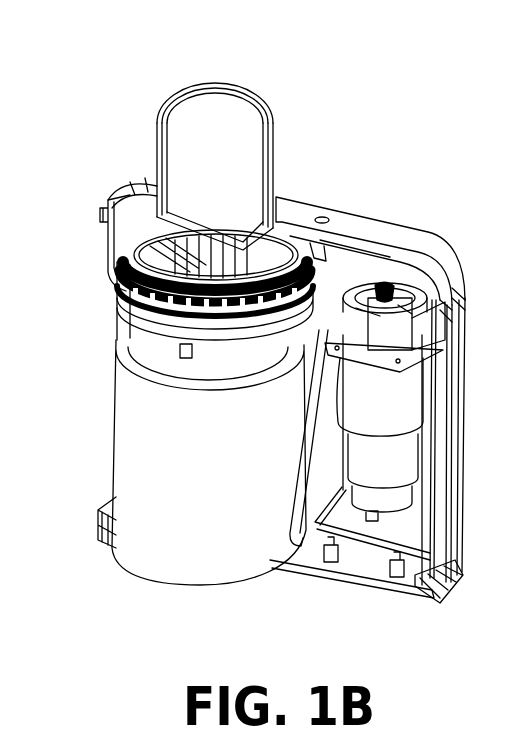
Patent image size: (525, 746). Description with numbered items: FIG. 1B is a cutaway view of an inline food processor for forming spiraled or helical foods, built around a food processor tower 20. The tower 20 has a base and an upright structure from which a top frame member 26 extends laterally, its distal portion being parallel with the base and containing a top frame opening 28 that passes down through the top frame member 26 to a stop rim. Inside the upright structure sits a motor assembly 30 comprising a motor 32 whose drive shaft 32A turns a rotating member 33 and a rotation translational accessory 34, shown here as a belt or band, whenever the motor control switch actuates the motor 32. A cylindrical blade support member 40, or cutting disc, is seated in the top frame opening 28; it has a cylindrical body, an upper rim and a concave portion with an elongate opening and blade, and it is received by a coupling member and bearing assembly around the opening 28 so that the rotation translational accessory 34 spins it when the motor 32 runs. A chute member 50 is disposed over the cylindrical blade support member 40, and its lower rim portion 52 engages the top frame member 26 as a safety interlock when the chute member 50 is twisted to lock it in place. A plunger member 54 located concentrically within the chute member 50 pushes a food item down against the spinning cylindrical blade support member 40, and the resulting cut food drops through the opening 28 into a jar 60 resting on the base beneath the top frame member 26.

The food processor tower 20 is at (450, 532).
The top frame member 26 is at (375, 230).
The top frame opening 28 is at (112, 244).
The motor assembly 30 is at (118, 311).
The motor 32 is at (407, 388).
The drive shaft 32A is at (385, 288).
The rotating member 33 is at (425, 286).
The rotation translational accessory 34 is at (118, 297).
The cylindrical blade support member 40 is at (283, 197).
The chute member 50 is at (274, 152).
The lower rim portion 52 is at (130, 181).
The plunger member 54 is at (240, 158).
The jar 60 is at (188, 560).